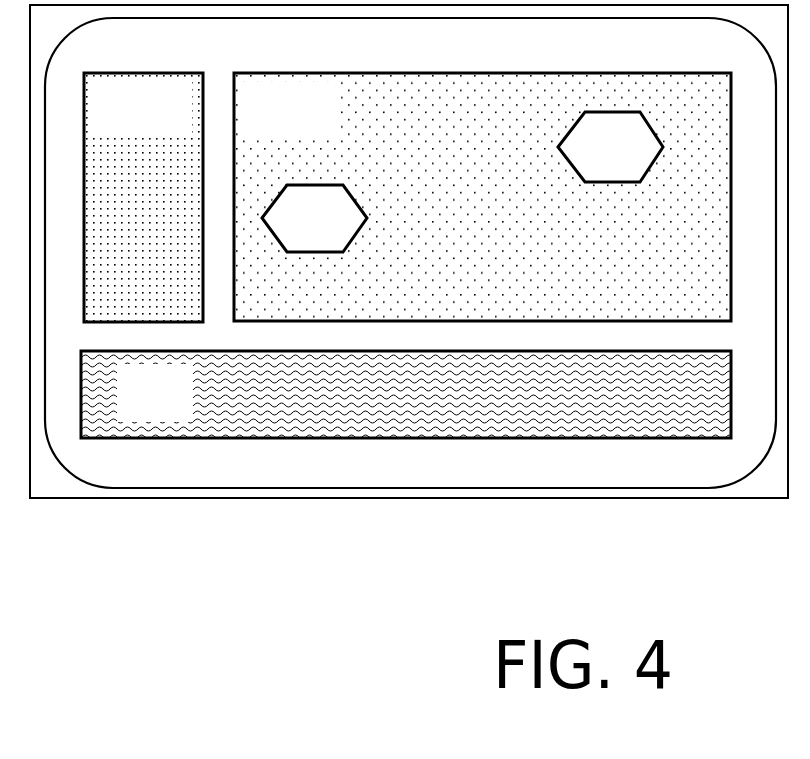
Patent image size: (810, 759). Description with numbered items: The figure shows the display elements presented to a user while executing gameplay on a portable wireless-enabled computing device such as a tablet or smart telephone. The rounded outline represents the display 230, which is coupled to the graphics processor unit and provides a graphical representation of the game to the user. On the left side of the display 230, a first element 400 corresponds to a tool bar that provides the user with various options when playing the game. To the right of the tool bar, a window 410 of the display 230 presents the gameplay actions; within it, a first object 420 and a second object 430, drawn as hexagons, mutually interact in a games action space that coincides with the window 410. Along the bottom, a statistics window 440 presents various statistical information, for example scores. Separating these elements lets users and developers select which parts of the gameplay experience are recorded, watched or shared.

The display 230 is at (423, 60).
The first element 400 is at (160, 122).
The window 410 is at (312, 122).
The first object 420 is at (333, 228).
The second object 430 is at (637, 158).
The statistics window 440 is at (173, 404).